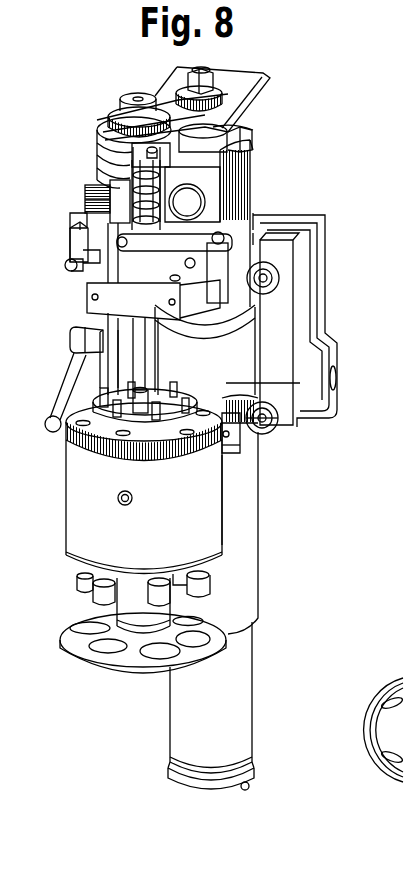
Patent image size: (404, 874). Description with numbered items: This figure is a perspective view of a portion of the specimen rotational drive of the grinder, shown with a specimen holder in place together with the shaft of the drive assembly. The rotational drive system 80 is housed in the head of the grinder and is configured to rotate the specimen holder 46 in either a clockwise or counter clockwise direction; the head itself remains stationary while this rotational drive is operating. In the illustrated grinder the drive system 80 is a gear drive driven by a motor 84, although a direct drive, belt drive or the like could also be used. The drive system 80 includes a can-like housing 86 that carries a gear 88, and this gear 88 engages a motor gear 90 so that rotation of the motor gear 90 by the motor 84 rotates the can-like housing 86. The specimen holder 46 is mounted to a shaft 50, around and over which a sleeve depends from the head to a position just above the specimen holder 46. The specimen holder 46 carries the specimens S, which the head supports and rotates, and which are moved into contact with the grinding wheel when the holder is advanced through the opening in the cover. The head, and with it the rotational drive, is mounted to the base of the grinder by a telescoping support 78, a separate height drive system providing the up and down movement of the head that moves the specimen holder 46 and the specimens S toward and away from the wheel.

The rotational drive system 80 is at (60, 483).
The motor 84 is at (258, 425).
The can-like housing 86 is at (220, 530).
The gear 88 is at (222, 452).
The motor gear 90 is at (226, 383).
The shaft 50 is at (130, 613).
The specimen holder 46 is at (78, 655).
The specimens S is at (212, 638).
The telescoping support 78 is at (252, 708).